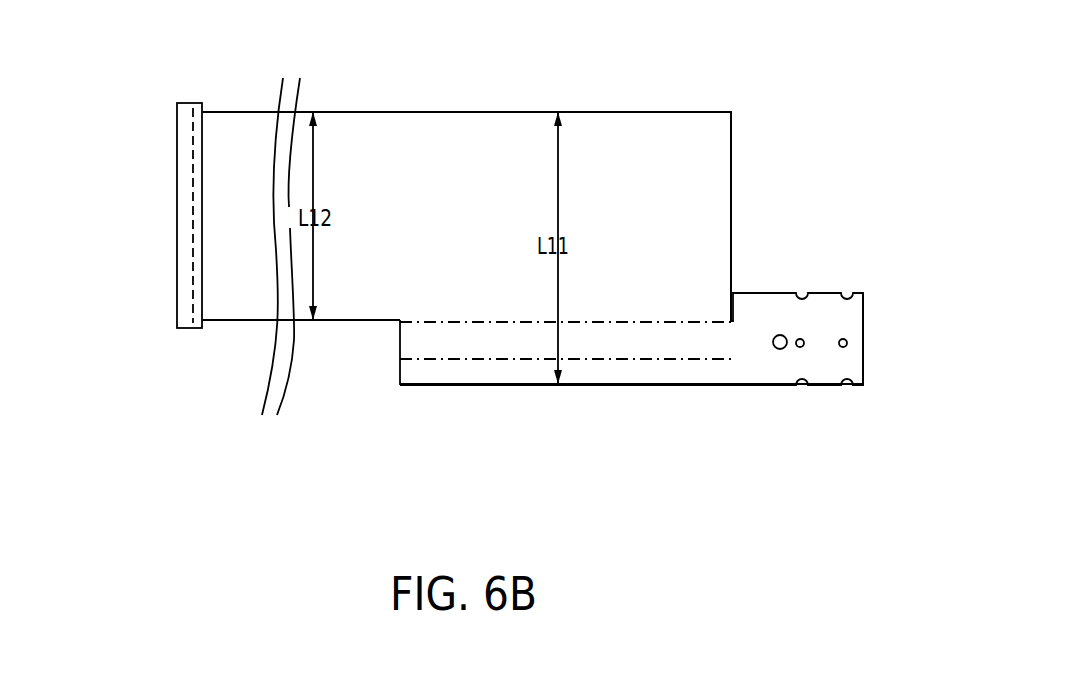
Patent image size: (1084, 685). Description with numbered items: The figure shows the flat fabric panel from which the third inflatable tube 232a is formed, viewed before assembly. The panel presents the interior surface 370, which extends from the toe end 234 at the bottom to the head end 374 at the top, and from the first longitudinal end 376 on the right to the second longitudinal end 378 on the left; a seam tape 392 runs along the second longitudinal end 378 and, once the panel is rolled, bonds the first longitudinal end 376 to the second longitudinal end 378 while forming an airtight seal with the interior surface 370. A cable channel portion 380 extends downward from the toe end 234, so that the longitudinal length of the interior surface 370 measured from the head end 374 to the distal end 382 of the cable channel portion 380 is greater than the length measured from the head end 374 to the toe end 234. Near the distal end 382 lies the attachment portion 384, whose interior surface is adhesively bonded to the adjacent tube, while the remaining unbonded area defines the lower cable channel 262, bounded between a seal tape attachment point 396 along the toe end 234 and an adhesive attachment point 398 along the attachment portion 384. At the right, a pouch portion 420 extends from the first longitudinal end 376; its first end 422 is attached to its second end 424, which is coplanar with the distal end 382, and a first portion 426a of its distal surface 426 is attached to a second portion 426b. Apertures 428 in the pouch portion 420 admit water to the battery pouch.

The third inflatable tube 232a is at (99, 70).
The seam tape 392 is at (183, 195).
The second longitudinal end 378 is at (203, 240).
The toe end 234 is at (237, 322).
The interior surface 370 is at (496, 228).
The head end 374 is at (437, 112).
The first longitudinal end 376 is at (731, 172).
The cable channel portion 380 is at (348, 320).
The lower cable channel 262 is at (388, 320).
The attachment portion 384 is at (388, 355).
The seal tape attachment point 396 is at (625, 321).
The adhesive attachment point 398 is at (679, 359).
The distal end 382 is at (628, 384).
The pouch portion 420 is at (863, 397).
The first end 422 is at (763, 293).
The second end 424 is at (836, 385).
The apertures 428 is at (786, 337).
The distal surface 426 is at (879, 338).
The second portion 426b is at (870, 385).
The first portion 426a is at (896, 361).